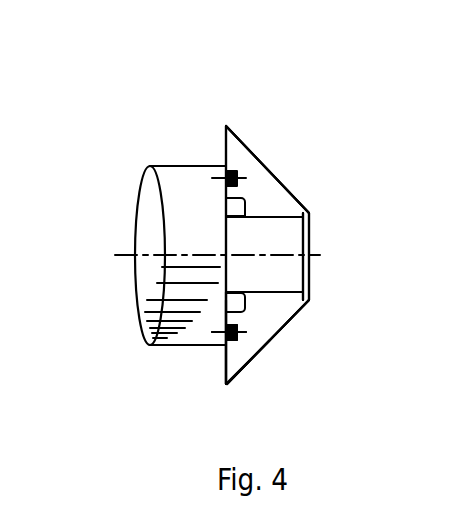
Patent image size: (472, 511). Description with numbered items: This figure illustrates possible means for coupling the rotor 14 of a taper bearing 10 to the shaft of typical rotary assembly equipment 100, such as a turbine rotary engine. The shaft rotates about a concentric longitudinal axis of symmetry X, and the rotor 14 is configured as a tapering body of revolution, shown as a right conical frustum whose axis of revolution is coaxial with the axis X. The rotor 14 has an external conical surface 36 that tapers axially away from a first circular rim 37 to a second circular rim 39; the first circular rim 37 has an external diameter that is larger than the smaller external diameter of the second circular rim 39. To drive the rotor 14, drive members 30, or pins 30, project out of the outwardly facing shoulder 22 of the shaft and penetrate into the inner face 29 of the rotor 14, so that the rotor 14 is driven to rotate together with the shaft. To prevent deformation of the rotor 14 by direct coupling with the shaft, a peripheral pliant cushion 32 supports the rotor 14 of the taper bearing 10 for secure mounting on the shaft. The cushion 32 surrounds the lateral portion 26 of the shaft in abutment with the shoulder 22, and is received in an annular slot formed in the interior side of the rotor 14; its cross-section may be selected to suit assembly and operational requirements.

The rotary assembly equipment 100 is at (190, 53).
The taper bearing 10 is at (132, 103).
The longitudinal axis of symmetry X is at (128, 257).
The external conical surface 36 is at (270, 165).
The first circular rim 37 is at (226, 126).
The rotor 14 is at (288, 307).
The inner face 29 is at (232, 358).
The lateral portion 26 is at (290, 242).
The second circular rim 39 is at (312, 210).
The peripheral pliant cushion 32 is at (228, 208).
The drive member 30 is at (227, 340).
The outwardly facing shoulder 22 is at (233, 323).